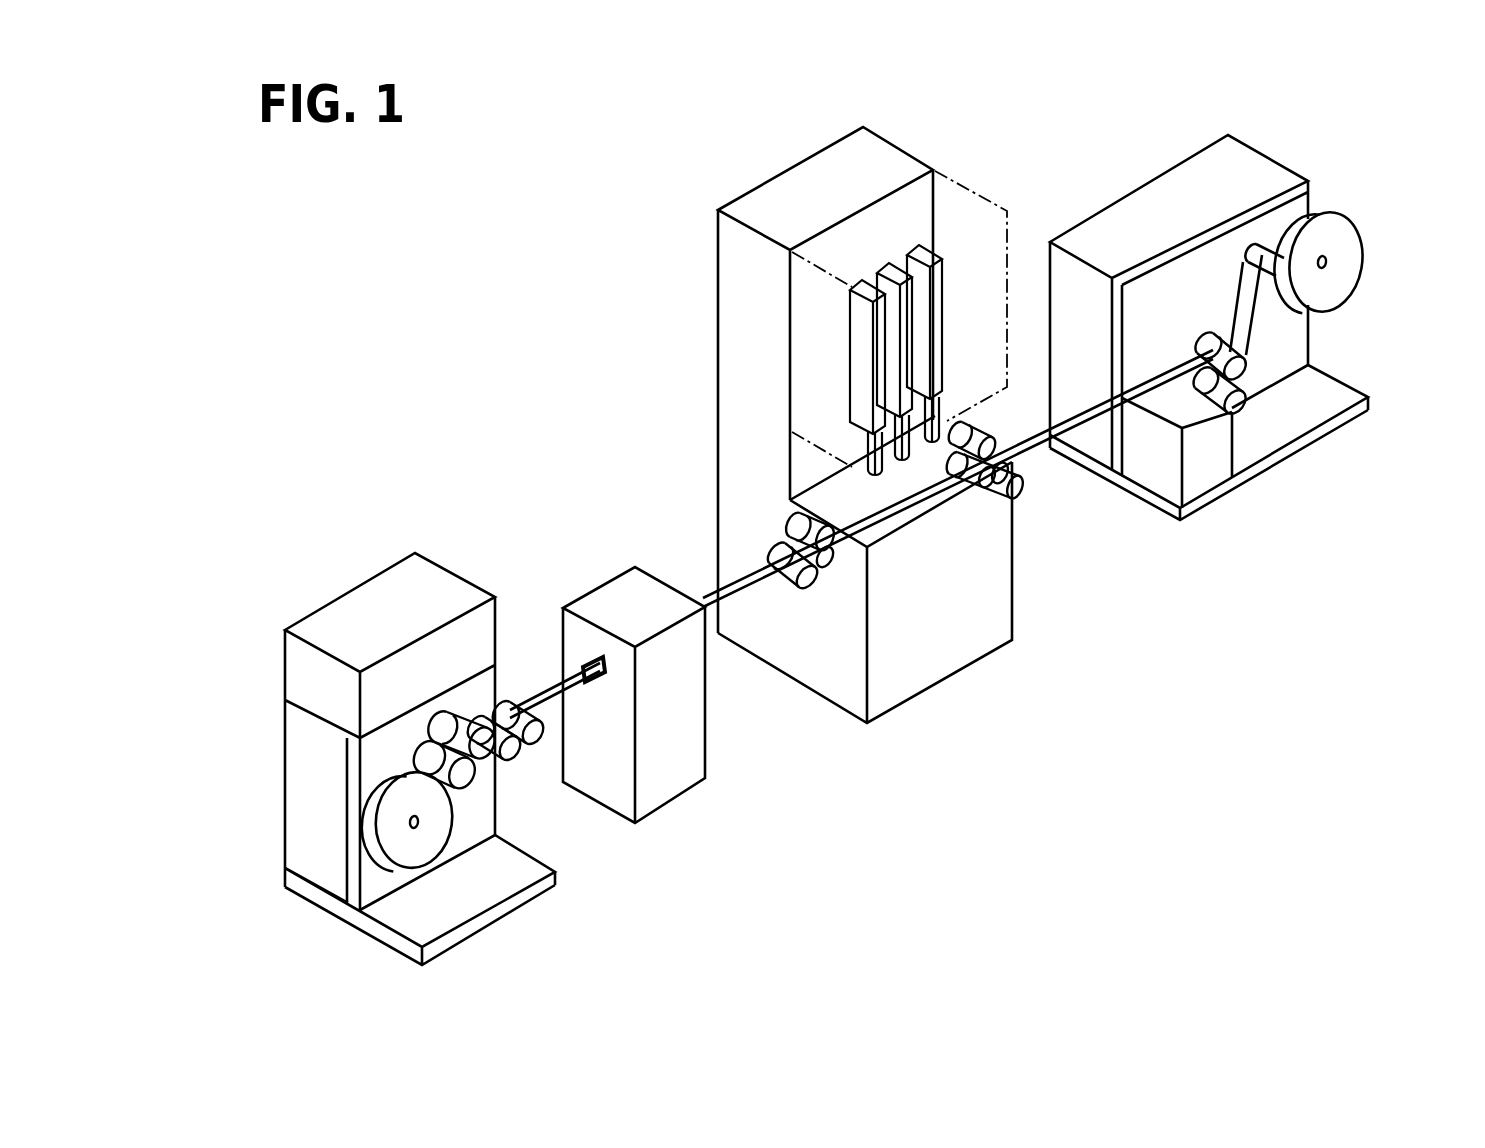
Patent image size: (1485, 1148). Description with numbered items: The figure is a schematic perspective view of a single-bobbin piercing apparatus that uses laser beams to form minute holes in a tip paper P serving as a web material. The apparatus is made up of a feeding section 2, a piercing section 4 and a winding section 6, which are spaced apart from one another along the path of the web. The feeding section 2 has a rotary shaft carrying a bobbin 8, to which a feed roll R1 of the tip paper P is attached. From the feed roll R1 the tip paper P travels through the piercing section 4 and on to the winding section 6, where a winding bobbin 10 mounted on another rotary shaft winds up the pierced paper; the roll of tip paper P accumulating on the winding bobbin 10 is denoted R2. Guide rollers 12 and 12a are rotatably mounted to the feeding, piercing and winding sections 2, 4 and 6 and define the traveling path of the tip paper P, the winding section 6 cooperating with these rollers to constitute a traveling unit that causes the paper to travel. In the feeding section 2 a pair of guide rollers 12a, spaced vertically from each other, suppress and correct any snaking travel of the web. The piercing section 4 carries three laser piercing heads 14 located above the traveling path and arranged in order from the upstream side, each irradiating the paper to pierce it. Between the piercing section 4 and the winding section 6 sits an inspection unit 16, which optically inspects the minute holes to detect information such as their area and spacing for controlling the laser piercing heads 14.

The feeding section 2 is at (1272, 172).
The feed roll R1 is at (1328, 256).
The bobbin 8 is at (1320, 290).
The guide rollers 12a is at (1238, 376).
The piercing section 4 is at (968, 645).
The laser piercing heads 14 is at (896, 365).
The tip paper P is at (1042, 452).
The guide rollers 12 is at (510, 760).
The winding section 6 is at (316, 621).
The roll of tip paper R2 is at (395, 867).
The winding bobbin 10 is at (408, 860).
The inspection unit 16 is at (667, 792).